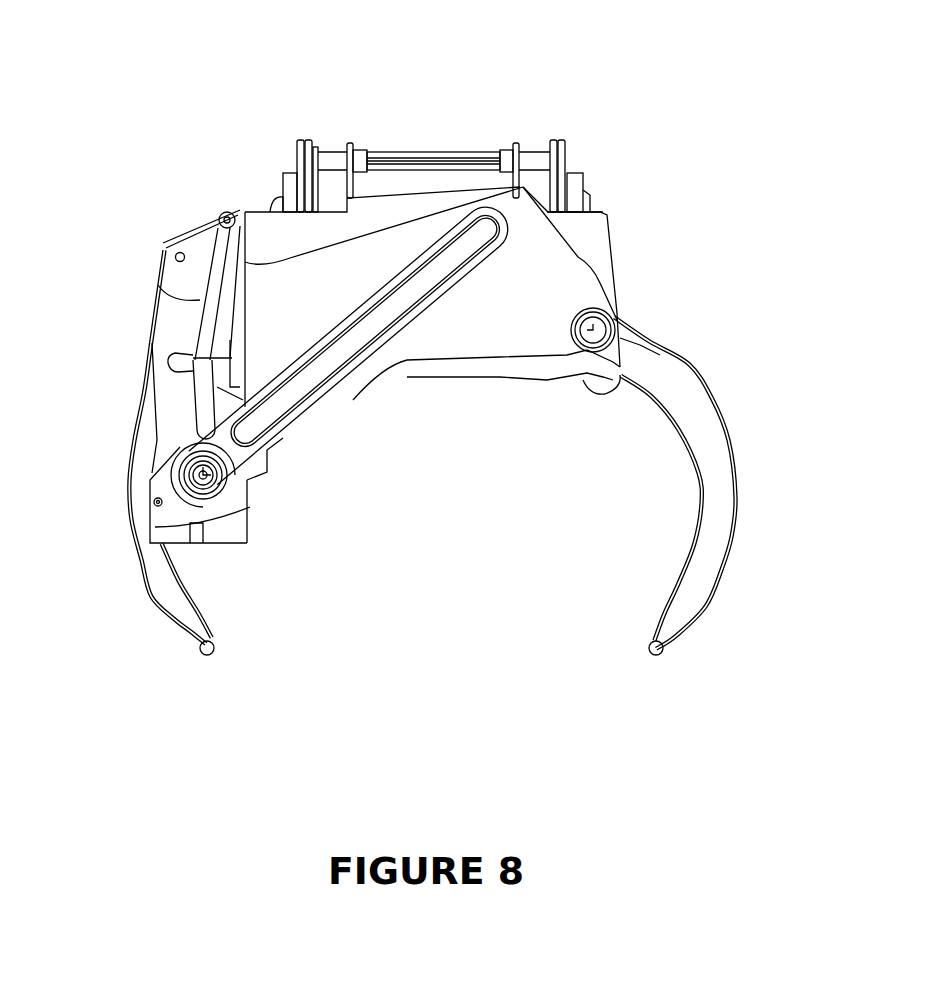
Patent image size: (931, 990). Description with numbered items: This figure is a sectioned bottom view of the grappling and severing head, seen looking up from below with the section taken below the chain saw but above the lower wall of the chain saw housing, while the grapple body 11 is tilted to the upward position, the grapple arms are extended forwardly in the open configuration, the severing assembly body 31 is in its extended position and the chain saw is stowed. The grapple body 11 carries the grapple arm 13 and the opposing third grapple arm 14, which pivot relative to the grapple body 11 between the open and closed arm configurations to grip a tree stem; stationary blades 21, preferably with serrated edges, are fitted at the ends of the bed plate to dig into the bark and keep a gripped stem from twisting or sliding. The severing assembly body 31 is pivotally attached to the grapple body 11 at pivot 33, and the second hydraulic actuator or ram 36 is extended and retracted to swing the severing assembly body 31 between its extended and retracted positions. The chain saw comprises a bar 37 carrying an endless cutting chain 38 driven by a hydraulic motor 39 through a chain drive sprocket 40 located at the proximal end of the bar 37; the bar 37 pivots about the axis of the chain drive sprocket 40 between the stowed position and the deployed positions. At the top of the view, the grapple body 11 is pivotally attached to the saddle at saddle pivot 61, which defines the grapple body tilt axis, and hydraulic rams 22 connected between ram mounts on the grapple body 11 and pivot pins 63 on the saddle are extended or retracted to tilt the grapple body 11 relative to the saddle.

The grapple body 11 is at (437, 187).
The grapple arm 13 is at (677, 400).
The third grapple arm 14 is at (167, 590).
The stationary blade 21 is at (468, 367).
The hydraulic ram 22 is at (587, 204).
The severing assembly body 31 is at (310, 297).
The pivot 33 is at (607, 327).
The second hydraulic actuator or ram 36 is at (168, 297).
The bar 37 is at (283, 410).
The endless cutting chain 38 is at (350, 380).
The hydraulic motor 39 is at (175, 470).
The chain drive sprocket 40 is at (212, 487).
The saddle pivot 61 is at (587, 183).
The pivot pin 63 is at (587, 200).